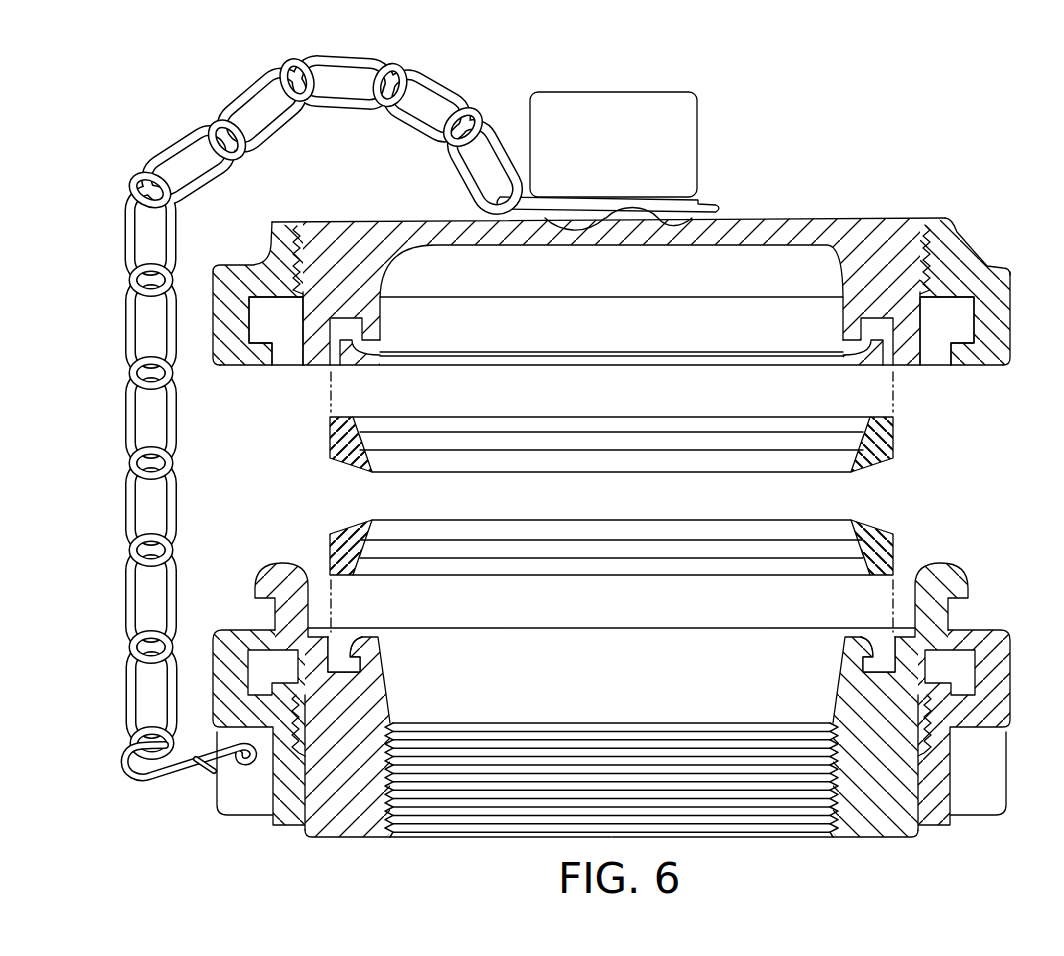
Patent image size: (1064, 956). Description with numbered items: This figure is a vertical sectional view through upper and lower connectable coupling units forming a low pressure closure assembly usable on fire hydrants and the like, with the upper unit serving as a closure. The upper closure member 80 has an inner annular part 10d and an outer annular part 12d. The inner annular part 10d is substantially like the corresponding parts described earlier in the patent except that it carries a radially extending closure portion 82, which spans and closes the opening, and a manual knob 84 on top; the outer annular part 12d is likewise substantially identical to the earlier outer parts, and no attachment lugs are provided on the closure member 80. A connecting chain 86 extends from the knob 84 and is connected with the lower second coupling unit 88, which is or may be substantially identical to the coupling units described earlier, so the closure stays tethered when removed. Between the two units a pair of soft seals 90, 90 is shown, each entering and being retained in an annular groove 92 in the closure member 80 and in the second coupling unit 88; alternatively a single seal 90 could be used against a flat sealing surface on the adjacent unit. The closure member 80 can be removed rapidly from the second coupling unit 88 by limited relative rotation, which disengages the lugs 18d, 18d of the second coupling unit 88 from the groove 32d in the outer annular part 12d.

The closure member 80 is at (634, 371).
The manual knob 84 is at (680, 131).
The inner annular part 10d is at (634, 411).
The outer annular part 12d is at (990, 374).
The groove 32d is at (287, 349).
The annular groove 92 is at (341, 346).
The radial extending closure portion 82 is at (612, 240).
The connecting chain 86 is at (130, 246).
The soft seal 90 is at (573, 530).
The lug 18d is at (255, 590).
The second coupling unit 88 is at (622, 725).